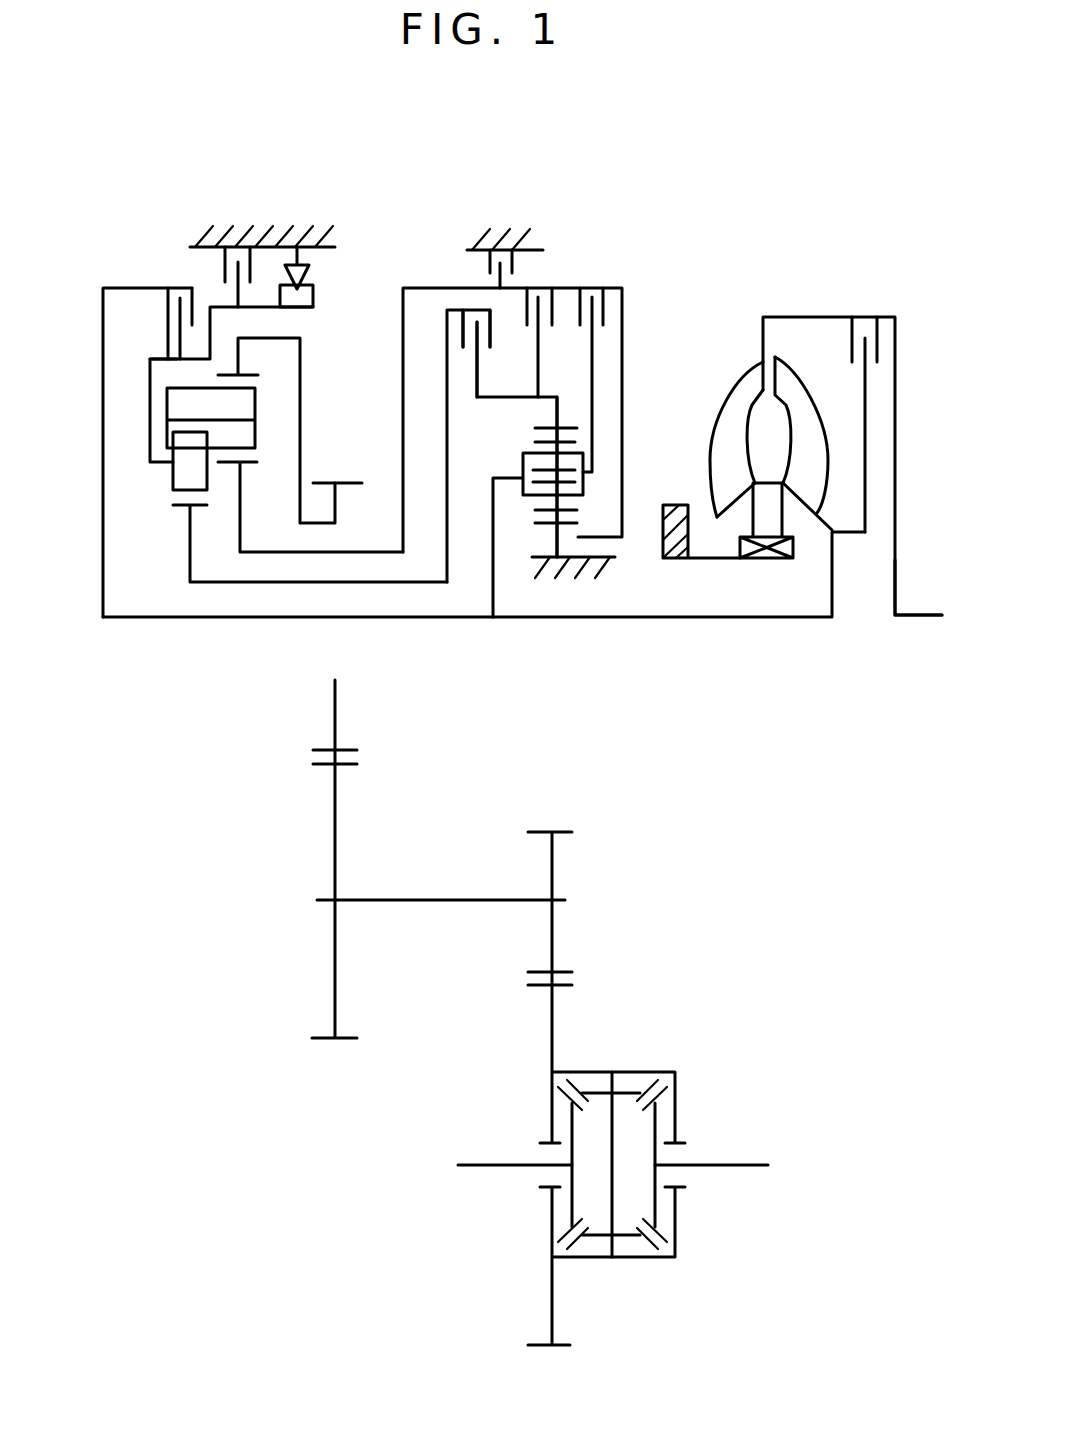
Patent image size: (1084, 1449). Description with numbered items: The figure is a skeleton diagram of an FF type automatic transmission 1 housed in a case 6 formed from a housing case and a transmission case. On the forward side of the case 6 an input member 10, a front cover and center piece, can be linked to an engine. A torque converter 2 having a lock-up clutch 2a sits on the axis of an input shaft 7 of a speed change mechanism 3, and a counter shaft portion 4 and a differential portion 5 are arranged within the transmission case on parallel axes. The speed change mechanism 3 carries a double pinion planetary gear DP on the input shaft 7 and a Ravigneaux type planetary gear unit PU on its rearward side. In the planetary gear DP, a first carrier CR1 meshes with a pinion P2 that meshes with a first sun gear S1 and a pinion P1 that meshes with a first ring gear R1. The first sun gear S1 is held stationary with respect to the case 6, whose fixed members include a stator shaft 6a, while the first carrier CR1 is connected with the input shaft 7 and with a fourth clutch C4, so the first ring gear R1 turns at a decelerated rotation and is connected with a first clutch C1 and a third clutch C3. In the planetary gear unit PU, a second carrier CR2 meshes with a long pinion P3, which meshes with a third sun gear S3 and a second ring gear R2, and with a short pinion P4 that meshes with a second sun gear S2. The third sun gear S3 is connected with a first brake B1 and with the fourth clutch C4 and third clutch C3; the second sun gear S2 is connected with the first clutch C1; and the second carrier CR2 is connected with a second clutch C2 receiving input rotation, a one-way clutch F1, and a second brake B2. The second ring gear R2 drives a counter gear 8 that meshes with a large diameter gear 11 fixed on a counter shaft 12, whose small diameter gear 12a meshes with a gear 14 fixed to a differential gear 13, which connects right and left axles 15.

The automatic transmission 1 is at (692, 208).
The torque converter 2 is at (784, 303).
The lock-up clutch 2a is at (868, 345).
The speed change mechanism 3 is at (403, 224).
The counter shaft portion 4 is at (306, 868).
The differential portion 5 is at (722, 1053).
The case 6 is at (197, 243).
The stator shaft 6a is at (600, 567).
The input shaft 7 is at (600, 620).
The counter gear 8 is at (341, 481).
The input member 10 is at (913, 614).
The large diameter gear 11 is at (336, 806).
The counter shaft 12 is at (435, 903).
The small diameter gear 12a is at (553, 854).
The differential gear 13 is at (642, 1258).
The gear 14 is at (553, 1018).
The axles 15 is at (483, 1167).
The first brake B1 is at (497, 240).
The second brake B2 is at (236, 249).
The first clutch C1 is at (494, 353).
The second clutch C2 is at (179, 307).
The third clutch C3 is at (537, 326).
The fourth clutch C4 is at (588, 364).
The first carrier CR1 is at (585, 490).
The second carrier CR2 is at (150, 367).
The planetary gear DP is at (586, 414).
The one-way clutch F1 is at (295, 249).
The pinion P1 is at (545, 442).
The pinion P2 is at (547, 511).
The long pinion P3 is at (259, 408).
The short pinion P4 is at (170, 473).
The planetary gear unit PU is at (134, 380).
The first ring gear R1 is at (542, 427).
The second ring gear R2 is at (262, 373).
The first sun gear S1 is at (549, 525).
The second sun gear S2 is at (178, 508).
The third sun gear S3 is at (247, 462).